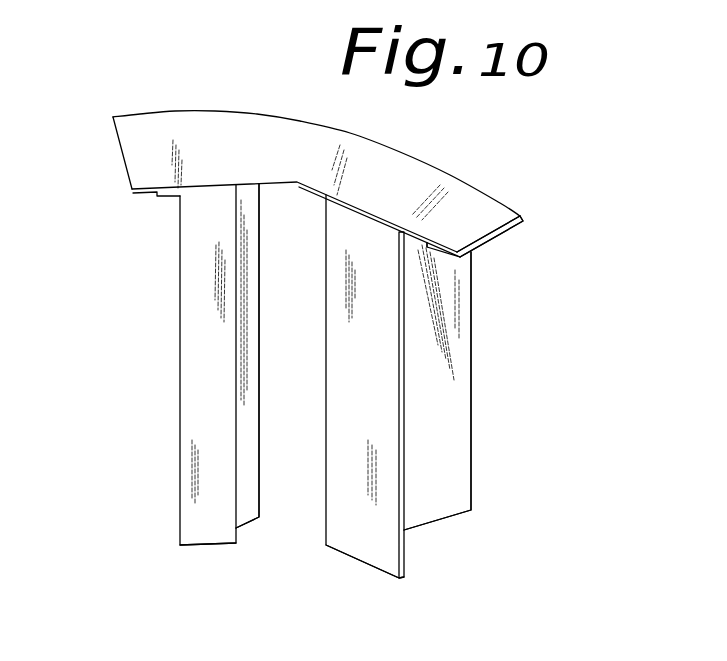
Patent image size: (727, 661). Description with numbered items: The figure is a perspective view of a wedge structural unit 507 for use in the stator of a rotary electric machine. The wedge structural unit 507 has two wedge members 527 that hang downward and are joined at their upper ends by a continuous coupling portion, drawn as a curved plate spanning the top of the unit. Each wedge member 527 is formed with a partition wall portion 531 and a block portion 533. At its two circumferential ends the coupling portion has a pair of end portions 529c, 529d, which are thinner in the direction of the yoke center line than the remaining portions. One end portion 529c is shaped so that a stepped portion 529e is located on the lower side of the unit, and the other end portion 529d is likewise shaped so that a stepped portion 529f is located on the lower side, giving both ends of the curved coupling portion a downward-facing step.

The wedge structural unit 507 is at (225, 132).
The end portion 529c is at (500, 214).
The end portion 529d is at (131, 138).
The stepped portion 529e is at (440, 248).
The stepped portion 529f is at (140, 194).
The wedge member 527 is at (205, 313).
The partition wall portion 531 is at (247, 406).
The block portion 533 is at (197, 472).